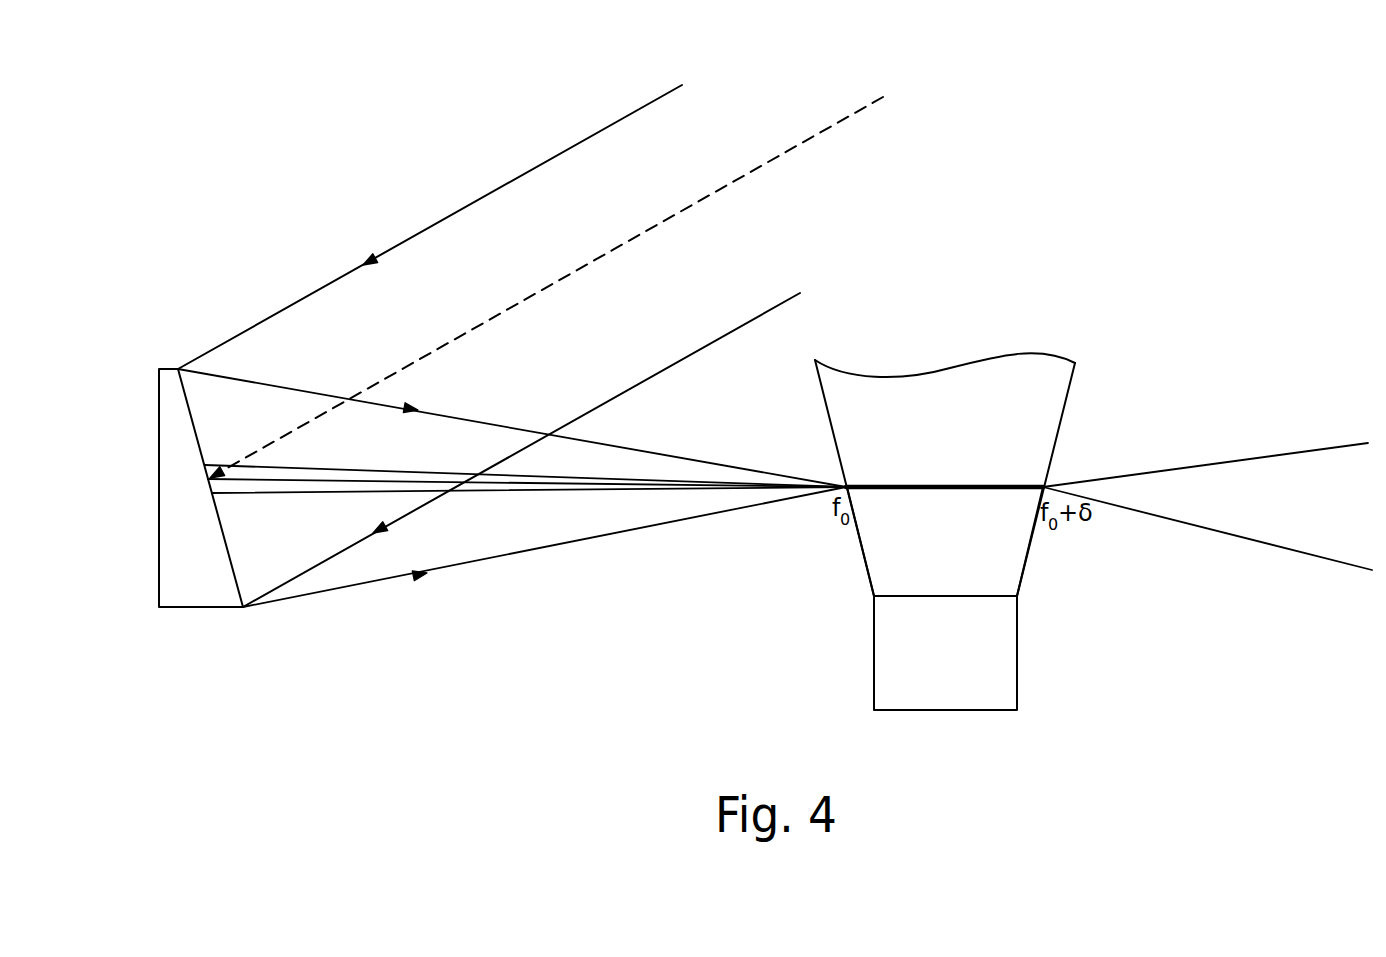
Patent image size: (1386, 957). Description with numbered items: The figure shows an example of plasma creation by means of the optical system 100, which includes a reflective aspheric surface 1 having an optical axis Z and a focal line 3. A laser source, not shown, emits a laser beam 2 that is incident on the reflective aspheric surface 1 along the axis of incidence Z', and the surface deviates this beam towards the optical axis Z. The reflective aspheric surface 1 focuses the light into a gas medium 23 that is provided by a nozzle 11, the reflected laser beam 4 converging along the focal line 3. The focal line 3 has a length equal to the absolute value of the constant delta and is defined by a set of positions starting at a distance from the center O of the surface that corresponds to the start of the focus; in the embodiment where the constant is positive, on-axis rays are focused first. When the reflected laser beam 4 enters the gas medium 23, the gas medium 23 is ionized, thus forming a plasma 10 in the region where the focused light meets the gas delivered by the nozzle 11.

The optical system 100 is at (160, 325).
The reflective aspheric surface 1 is at (205, 559).
The laser beam 2 is at (532, 168).
The reflected laser beam 4 is at (697, 460).
The plasma 10 is at (1008, 485).
The focal line 3 is at (947, 492).
The gas medium 23 is at (890, 567).
The nozzle 11 is at (890, 677).
The optical axis Z is at (525, 570).
The axis of incidence Z' is at (554, 287).
The center O is at (207, 479).